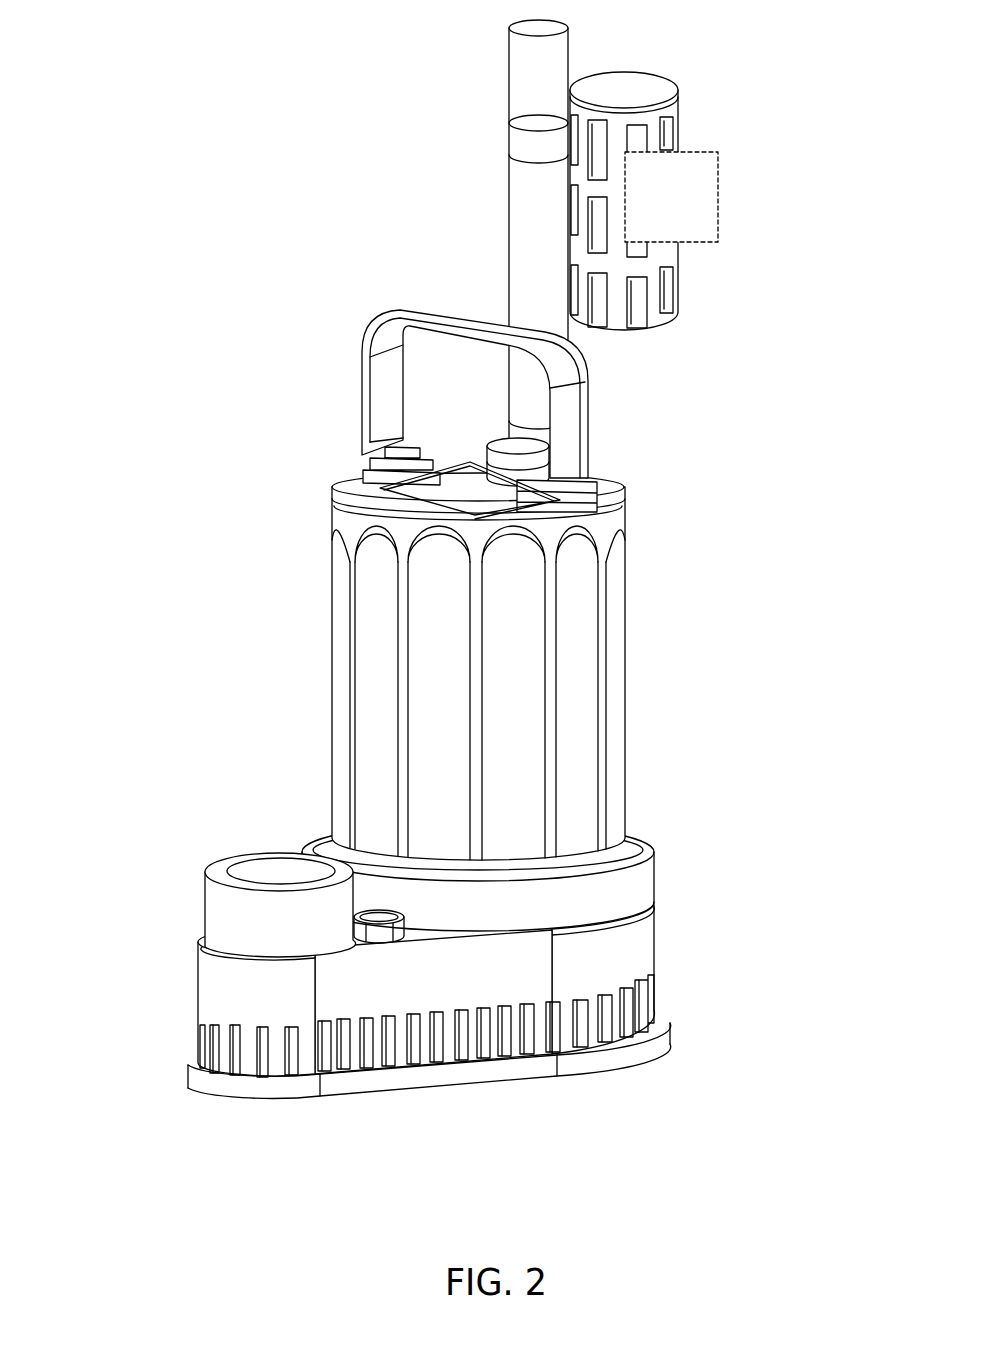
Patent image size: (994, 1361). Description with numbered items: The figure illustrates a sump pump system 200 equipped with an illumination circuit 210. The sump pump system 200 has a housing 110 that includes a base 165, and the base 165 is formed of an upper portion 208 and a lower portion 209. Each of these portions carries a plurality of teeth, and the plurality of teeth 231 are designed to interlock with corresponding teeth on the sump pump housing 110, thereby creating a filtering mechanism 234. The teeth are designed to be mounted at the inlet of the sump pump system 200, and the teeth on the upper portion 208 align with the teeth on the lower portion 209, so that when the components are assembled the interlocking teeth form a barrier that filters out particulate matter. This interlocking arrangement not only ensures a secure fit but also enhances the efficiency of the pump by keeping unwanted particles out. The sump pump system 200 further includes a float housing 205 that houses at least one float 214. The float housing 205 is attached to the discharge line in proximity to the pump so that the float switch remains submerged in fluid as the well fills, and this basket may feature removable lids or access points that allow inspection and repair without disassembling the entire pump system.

The sump pump system 200 is at (434, 578).
The float housing 205 is at (681, 221).
The illumination circuit 210 is at (689, 209).
The float 214 is at (633, 298).
The housing 110 is at (330, 580).
The base 165 is at (657, 948).
The upper portion 208 is at (190, 973).
The lower portion 209 is at (187, 1063).
The plurality of teeth 231 is at (253, 1058).
The filtering mechanism 234 is at (682, 1017).